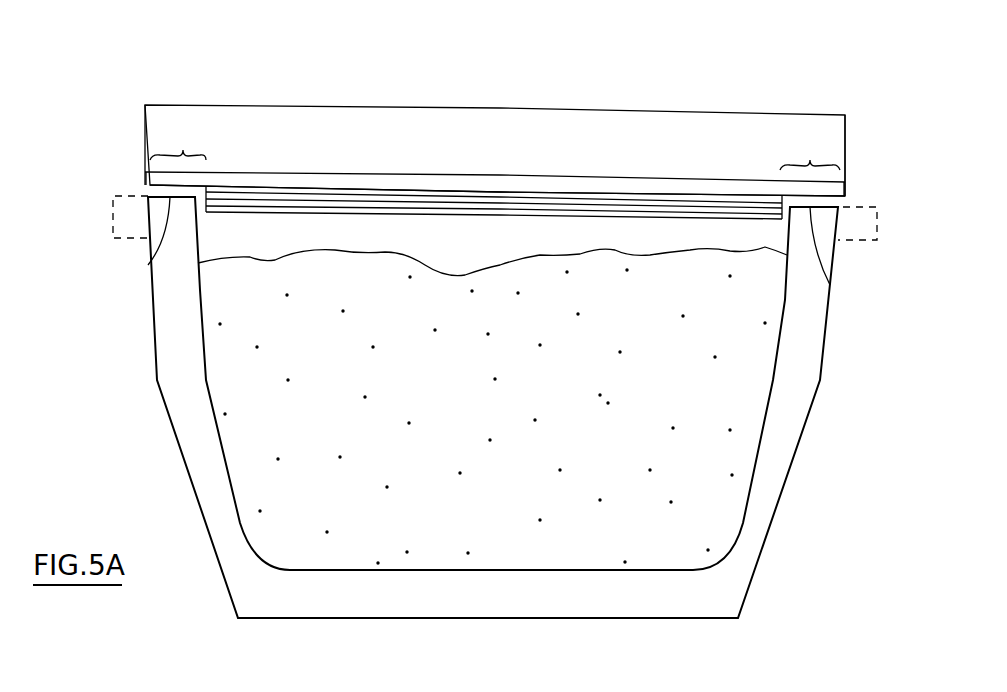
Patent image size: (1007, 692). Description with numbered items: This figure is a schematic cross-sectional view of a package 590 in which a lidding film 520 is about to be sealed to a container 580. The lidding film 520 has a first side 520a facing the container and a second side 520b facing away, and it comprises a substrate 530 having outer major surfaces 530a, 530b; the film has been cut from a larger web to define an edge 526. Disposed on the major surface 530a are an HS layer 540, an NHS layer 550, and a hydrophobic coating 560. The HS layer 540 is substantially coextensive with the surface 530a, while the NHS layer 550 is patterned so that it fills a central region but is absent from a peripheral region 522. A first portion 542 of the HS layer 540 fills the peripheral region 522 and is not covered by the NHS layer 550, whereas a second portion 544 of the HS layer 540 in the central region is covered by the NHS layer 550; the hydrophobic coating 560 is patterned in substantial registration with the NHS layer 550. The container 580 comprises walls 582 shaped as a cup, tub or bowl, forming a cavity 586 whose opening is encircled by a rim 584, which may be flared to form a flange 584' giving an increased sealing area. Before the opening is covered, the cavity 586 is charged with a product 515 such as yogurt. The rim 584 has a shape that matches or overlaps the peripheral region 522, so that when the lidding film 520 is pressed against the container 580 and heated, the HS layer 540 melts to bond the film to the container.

The package 590 is at (254, 33).
The lidding film 520 is at (80, 128).
The second side 520b is at (572, 96).
The first side 520a is at (575, 228).
The peripheral region 522 is at (495, 145).
The edge 526 is at (145, 135).
The first portion of the HS layer 542 is at (195, 180).
The second portion of the HS layer 544 is at (295, 183).
The substrate 530 is at (350, 152).
The outer major surface 530b is at (465, 108).
The outer major surface 530a is at (465, 174).
The HS layer 540 is at (483, 180).
The NHS layer 550 is at (535, 198).
The hydrophobic coating 560 is at (600, 210).
The cavity 586 is at (698, 236).
The container 580 is at (106, 380).
The walls 582 is at (813, 383).
The rim 584 is at (491, 253).
The flange 584' is at (480, 233).
The product 515 is at (492, 433).